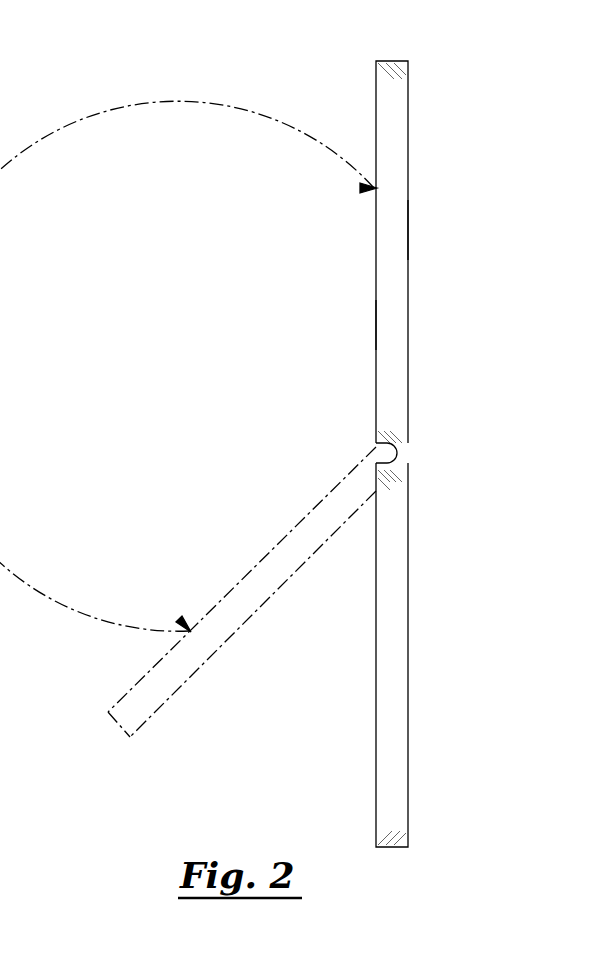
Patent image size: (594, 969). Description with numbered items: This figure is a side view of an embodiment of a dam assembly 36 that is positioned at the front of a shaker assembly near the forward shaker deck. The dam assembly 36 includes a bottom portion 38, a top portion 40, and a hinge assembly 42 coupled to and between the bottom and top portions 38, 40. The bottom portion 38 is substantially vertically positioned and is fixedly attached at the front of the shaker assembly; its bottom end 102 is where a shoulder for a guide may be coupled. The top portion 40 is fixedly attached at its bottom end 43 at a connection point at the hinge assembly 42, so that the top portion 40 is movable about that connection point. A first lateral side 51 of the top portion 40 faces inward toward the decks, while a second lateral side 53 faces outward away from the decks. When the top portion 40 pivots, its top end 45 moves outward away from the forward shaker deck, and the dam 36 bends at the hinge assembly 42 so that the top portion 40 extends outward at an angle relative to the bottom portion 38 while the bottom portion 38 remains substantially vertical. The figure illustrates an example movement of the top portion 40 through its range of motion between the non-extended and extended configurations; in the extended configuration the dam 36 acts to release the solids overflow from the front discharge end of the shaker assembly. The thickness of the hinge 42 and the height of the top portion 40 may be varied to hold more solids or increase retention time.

The dam assembly 36 is at (295, 455).
The bottom portion 38 is at (400, 730).
The top portion 40 is at (385, 143).
The hinge assembly 42 is at (398, 452).
The bottom end 43 is at (406, 420).
The top end 45 is at (390, 63).
The first lateral side 51 is at (409, 230).
The second lateral side 53 is at (377, 325).
The bottom end 102 is at (400, 847).